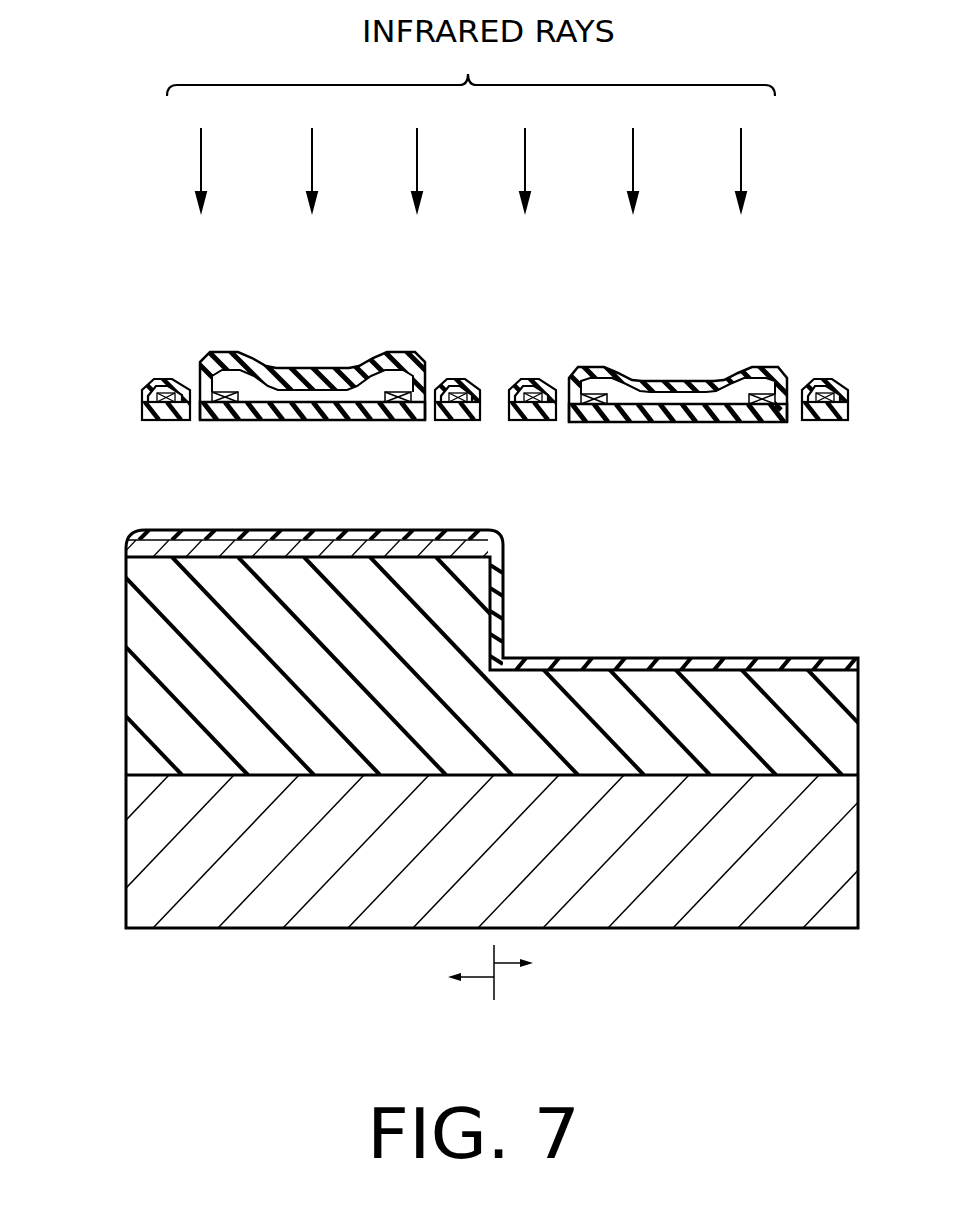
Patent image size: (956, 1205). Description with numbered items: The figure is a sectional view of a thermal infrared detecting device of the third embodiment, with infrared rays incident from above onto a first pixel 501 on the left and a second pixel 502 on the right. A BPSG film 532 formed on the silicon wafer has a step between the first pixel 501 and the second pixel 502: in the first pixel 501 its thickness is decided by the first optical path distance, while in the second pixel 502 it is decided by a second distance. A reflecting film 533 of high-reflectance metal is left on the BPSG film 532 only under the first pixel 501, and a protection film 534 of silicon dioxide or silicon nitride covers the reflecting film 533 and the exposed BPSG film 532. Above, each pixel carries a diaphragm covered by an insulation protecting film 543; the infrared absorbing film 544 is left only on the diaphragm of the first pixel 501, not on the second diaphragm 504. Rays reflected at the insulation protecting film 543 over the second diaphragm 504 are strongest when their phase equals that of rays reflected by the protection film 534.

The first pixel 501 is at (433, 977).
The second pixel 502 is at (547, 967).
The second diaphragm 504 is at (657, 430).
The first BPSG film 532 is at (137, 682).
The reflecting film 533 is at (429, 549).
The protection film 534 is at (742, 658).
The insulation protecting film 543 is at (707, 399).
The infrared absorbing film 544 is at (332, 367).